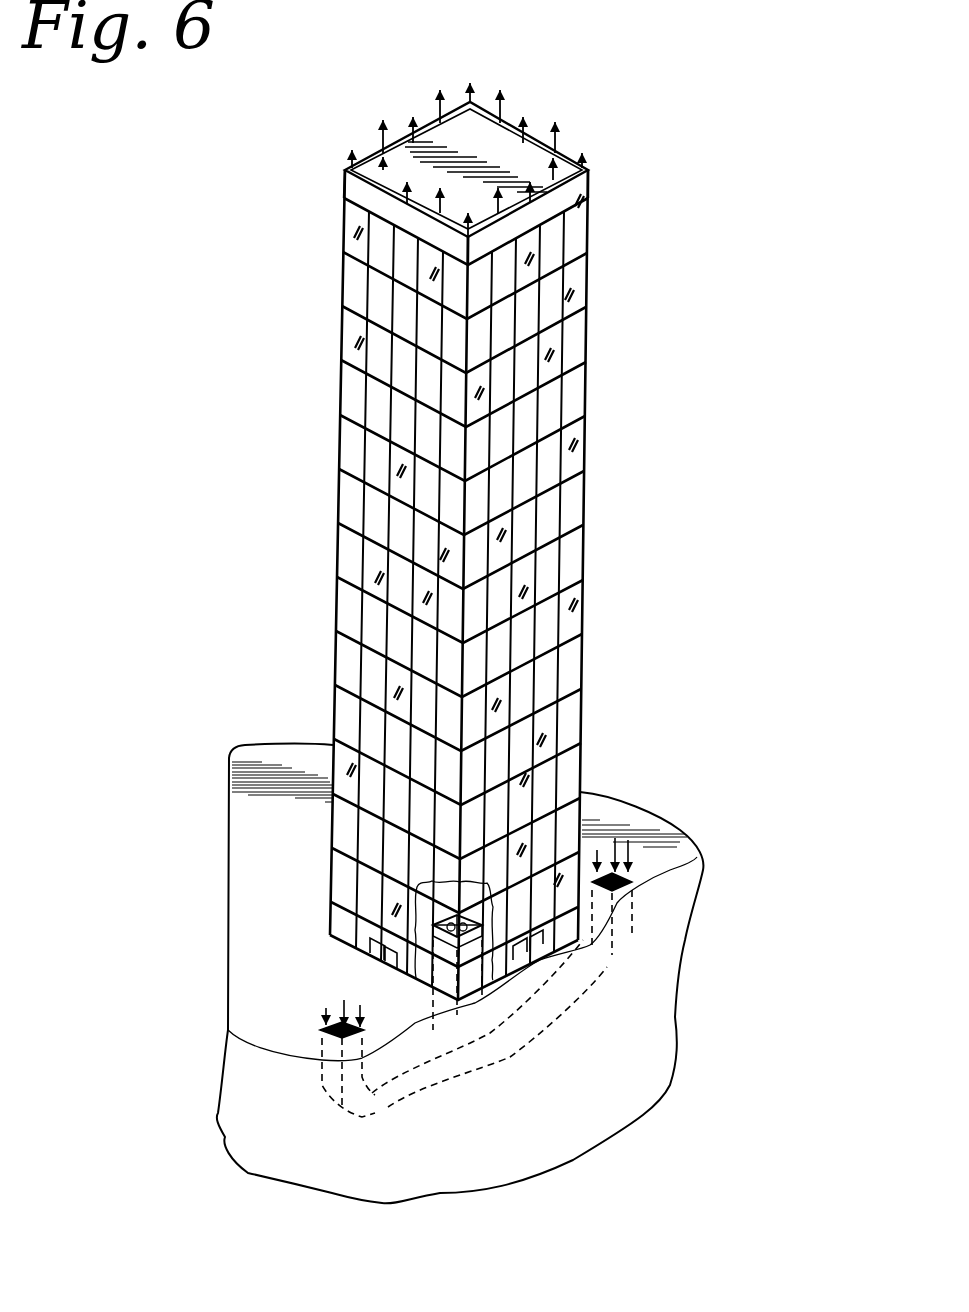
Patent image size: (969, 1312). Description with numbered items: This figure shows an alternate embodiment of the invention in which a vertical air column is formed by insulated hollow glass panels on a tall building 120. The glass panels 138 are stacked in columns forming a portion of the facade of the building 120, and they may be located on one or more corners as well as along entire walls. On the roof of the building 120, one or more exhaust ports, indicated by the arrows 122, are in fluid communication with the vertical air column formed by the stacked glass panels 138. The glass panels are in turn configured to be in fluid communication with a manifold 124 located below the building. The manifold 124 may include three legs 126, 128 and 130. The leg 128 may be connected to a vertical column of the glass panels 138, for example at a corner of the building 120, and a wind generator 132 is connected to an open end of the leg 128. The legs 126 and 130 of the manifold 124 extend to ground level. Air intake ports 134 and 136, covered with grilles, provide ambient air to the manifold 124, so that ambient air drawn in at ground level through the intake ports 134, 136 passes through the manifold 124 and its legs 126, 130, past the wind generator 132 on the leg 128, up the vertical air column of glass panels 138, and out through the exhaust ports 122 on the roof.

The building 120 is at (483, 157).
The exhaust ports 122 is at (364, 148).
The manifold 124 is at (600, 940).
The leg 126 is at (598, 972).
The leg 128 is at (445, 967).
The leg 130 is at (387, 1097).
The wind generator 132 is at (458, 913).
The air intake port 134 is at (326, 1024).
The air intake port 136 is at (628, 870).
The glass panels 138 is at (575, 567).